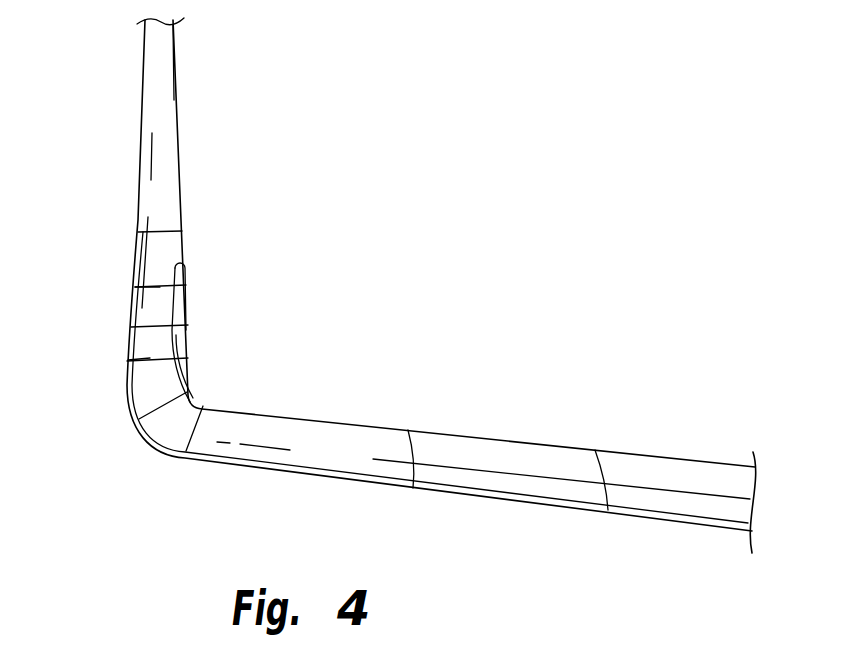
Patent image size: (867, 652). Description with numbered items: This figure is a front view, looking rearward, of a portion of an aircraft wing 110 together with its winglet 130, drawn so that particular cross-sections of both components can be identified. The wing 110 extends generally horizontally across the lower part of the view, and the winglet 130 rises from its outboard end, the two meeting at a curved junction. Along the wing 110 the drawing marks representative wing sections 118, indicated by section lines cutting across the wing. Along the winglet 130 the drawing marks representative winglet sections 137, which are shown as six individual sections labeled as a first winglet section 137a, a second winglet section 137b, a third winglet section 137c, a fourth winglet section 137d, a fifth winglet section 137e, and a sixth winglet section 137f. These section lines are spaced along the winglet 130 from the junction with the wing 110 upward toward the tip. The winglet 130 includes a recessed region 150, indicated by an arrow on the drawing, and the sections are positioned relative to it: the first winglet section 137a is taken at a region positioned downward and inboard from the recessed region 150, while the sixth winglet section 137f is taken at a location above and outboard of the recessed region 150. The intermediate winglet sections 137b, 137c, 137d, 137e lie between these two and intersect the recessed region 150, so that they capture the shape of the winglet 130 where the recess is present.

The wing 110 is at (693, 465).
The wing sections 118 is at (597, 488).
The winglet 130 is at (173, 97).
The winglet sections 137 is at (322, 300).
The first winglet section 137a is at (190, 437).
The second winglet section 137b is at (148, 437).
The third winglet section 137c is at (148, 362).
The fourth winglet section 137d is at (160, 326).
The fifth winglet section 137e is at (160, 287).
The sixth winglet section 137f is at (162, 231).
The recessed region 150 is at (202, 318).